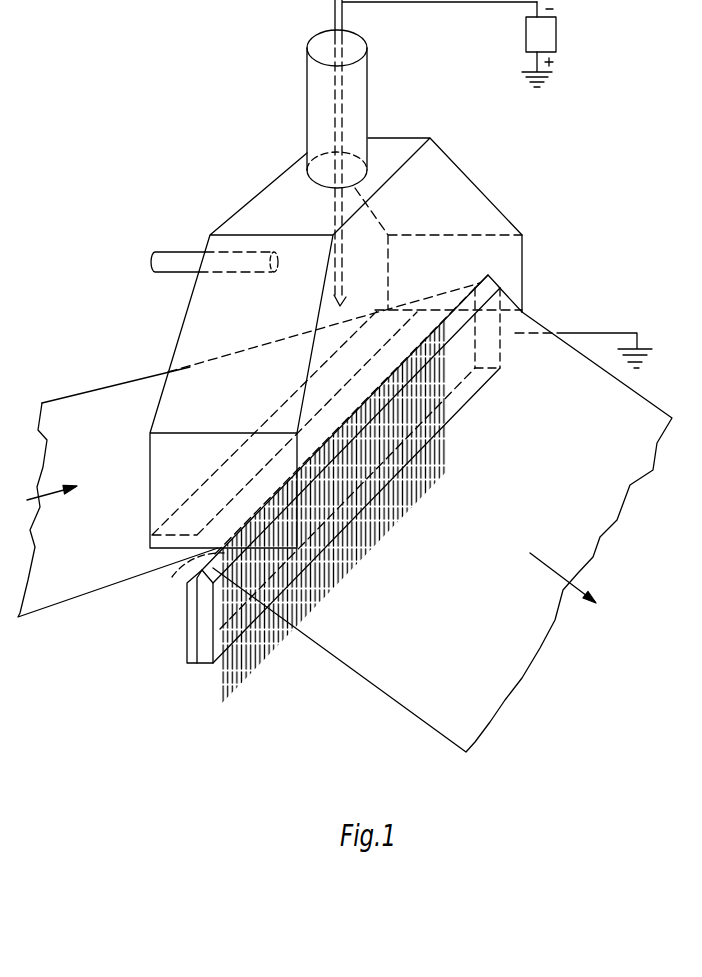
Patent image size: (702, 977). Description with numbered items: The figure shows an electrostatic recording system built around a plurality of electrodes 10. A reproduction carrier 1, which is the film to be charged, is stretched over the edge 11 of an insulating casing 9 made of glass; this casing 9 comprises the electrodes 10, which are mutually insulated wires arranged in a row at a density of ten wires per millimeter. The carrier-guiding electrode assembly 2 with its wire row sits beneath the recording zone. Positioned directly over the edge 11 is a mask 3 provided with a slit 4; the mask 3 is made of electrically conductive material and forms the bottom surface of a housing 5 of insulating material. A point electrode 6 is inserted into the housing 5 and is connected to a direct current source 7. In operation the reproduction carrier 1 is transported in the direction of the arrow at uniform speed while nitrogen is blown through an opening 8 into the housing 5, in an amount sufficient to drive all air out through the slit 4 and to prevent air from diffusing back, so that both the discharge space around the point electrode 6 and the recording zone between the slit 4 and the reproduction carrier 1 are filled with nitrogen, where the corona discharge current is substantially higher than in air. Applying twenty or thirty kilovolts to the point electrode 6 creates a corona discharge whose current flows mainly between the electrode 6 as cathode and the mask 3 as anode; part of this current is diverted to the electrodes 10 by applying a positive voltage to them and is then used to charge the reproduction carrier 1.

The reproduction carrier 1 is at (407, 685).
The electrode bar (brush holder) 2 is at (185, 653).
The mask 3 is at (205, 497).
The slit 4 is at (171, 578).
The housing 5 is at (480, 184).
The point electrode 6 is at (348, 300).
The direct current source 7 is at (525, 38).
The opening 8 is at (188, 257).
The insulating casing 9 is at (190, 635).
The electrodes 10 is at (227, 700).
The edge 11 is at (446, 308).